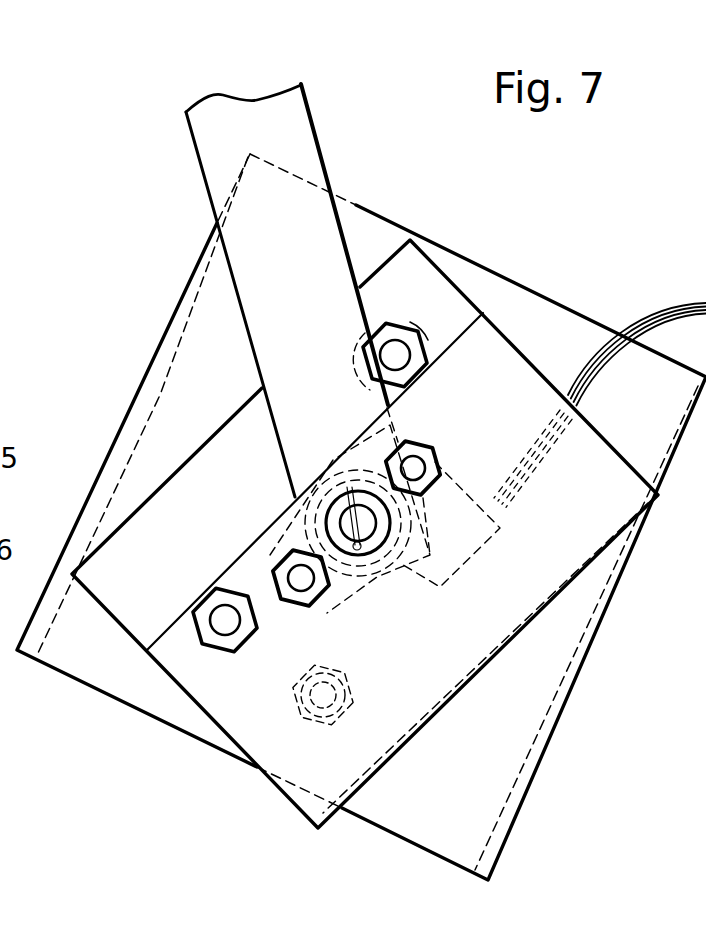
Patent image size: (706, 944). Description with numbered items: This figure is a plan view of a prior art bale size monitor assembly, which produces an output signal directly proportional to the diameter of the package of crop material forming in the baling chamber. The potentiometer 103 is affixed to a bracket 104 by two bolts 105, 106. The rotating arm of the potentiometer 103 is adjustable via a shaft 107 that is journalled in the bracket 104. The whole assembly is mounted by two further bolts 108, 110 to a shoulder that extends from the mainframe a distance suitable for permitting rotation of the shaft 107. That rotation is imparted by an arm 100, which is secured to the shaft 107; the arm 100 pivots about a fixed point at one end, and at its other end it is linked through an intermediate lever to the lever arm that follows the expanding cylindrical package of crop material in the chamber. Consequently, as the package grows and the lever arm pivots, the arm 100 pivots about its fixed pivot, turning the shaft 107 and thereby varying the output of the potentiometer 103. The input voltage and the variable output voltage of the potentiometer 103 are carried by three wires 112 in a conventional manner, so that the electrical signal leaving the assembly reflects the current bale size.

The arm 100 is at (307, 167).
The potentiometer 103 is at (487, 543).
The bracket 104 is at (210, 687).
The bolt 105 is at (428, 453).
The bolt 106 is at (303, 580).
The shaft 107 is at (367, 527).
The bolt 108 is at (397, 357).
The bolt 110 is at (317, 700).
The wires 112 is at (645, 315).